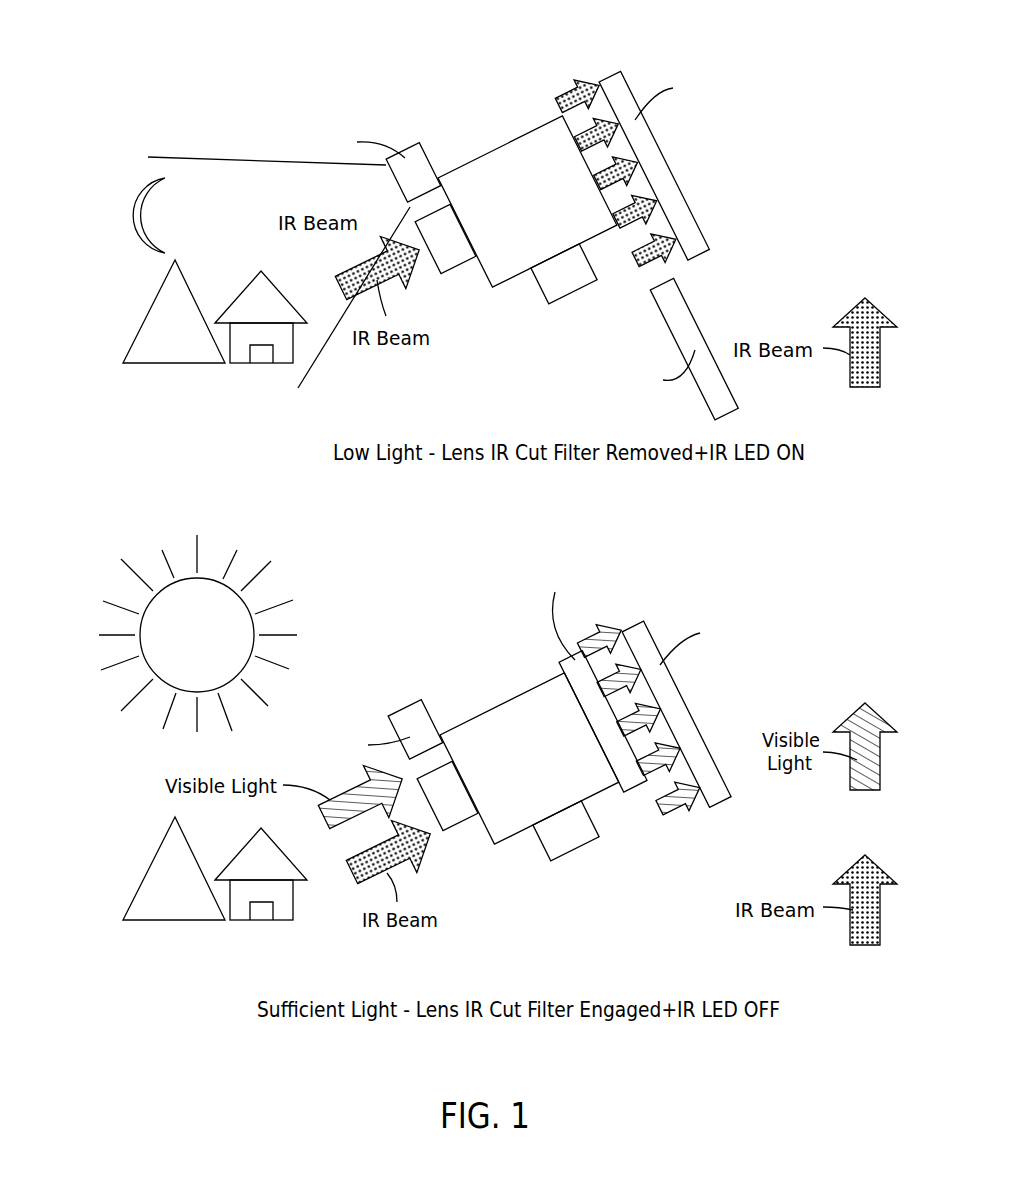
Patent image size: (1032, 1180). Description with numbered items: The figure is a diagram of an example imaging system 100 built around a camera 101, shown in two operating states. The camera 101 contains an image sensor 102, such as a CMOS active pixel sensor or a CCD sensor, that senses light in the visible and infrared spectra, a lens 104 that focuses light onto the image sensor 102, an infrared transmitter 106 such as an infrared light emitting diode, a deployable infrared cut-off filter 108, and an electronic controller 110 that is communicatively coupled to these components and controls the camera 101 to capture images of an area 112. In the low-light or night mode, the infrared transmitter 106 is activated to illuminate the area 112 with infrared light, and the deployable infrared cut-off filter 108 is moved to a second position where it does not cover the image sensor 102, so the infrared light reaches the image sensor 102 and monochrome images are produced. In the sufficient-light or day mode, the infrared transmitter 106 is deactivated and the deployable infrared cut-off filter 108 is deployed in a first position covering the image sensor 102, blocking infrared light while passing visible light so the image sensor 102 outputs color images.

The imaging system 100 is at (826, 61).
The camera 101 is at (497, 124).
The image sensor 102 is at (686, 144).
The lens 104 is at (463, 280).
The infrared transmitter 106 is at (400, 136).
The deployable infrared cut-off filter 108 is at (724, 326).
The electronic controller 110 is at (578, 292).
The area 112 is at (122, 295).